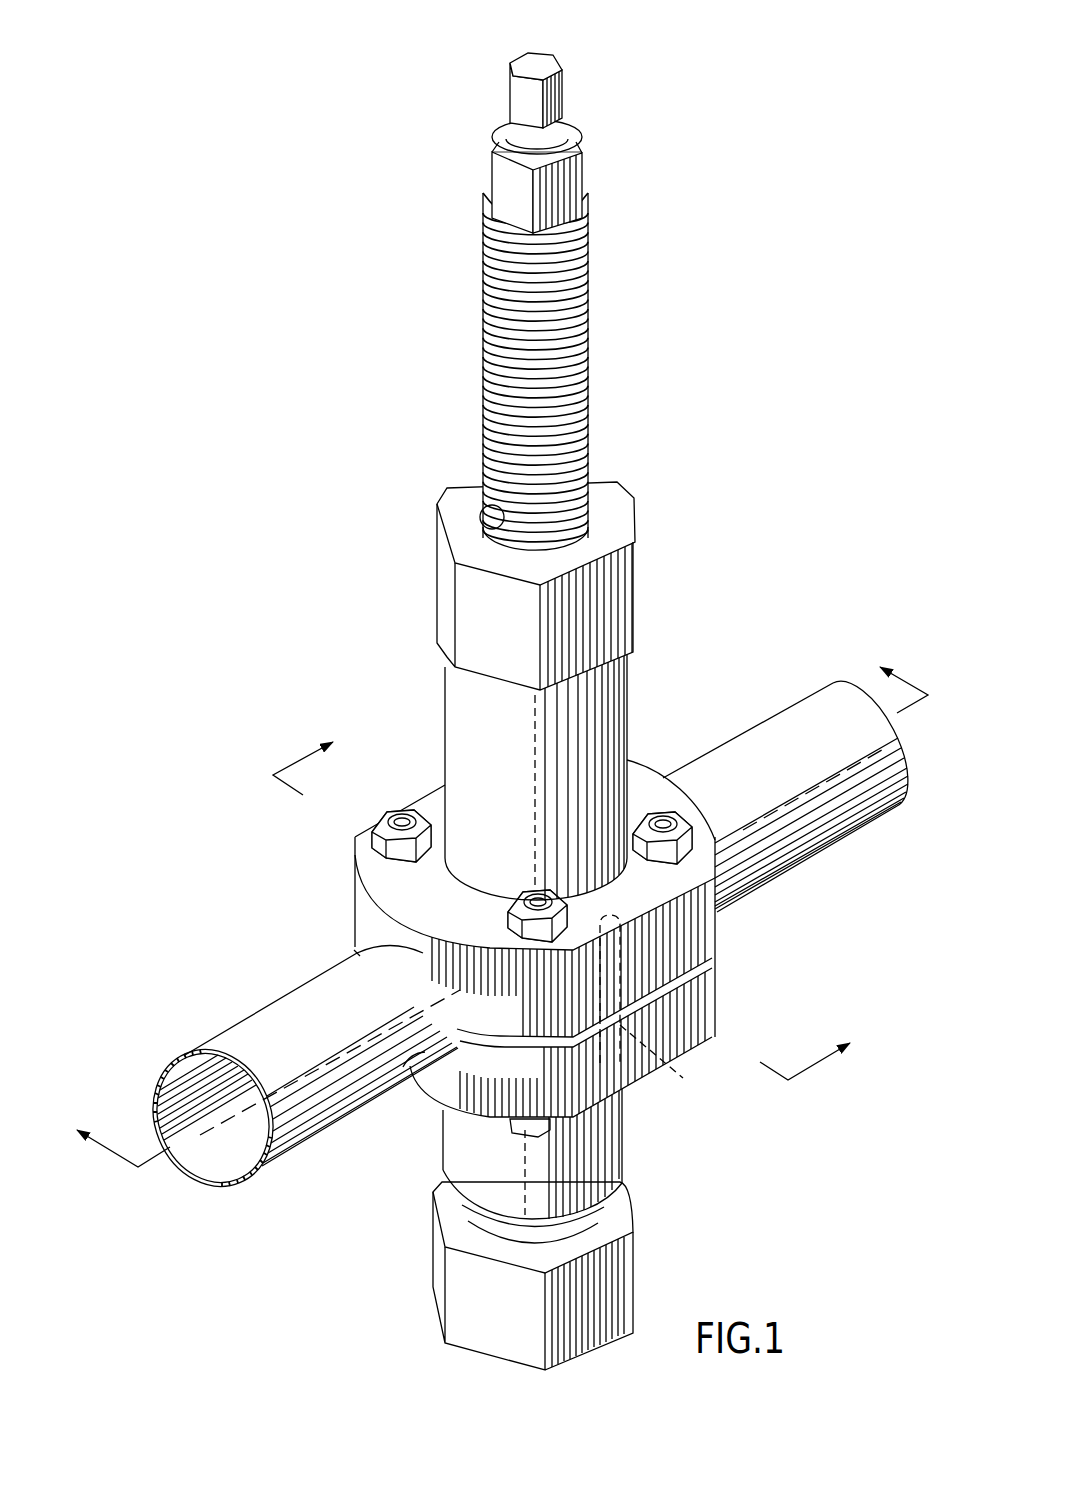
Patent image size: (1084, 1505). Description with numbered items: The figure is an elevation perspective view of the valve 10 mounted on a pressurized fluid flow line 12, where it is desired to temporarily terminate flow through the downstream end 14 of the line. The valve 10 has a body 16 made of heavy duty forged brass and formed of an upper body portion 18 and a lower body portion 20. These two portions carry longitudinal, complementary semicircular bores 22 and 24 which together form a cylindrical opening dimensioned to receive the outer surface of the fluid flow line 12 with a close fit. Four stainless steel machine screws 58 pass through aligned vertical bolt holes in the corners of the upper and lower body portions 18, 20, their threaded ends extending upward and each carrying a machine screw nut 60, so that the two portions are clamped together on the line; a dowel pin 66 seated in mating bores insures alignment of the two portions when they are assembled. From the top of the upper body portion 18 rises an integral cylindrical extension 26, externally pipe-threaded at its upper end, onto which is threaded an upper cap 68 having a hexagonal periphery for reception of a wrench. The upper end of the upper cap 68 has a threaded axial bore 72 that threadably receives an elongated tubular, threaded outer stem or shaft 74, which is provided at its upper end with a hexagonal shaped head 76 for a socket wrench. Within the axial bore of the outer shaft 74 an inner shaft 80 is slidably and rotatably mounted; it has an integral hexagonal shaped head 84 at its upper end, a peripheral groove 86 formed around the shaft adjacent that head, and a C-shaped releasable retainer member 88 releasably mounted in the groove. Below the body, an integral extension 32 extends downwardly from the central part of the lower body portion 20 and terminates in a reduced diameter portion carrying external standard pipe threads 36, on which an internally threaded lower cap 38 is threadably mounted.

The valve 10 is at (338, 855).
The fluid flow line 12 is at (790, 718).
The downstream end 14 is at (262, 1018).
The body 16 is at (650, 765).
The upper body portion 18 is at (705, 935).
The lower body portion 20 is at (705, 1000).
The semicircular bore 22 is at (362, 950).
The semicircular bore 24 is at (415, 1063).
The cylindrical extension 26 is at (613, 690).
The integral extension 32 is at (608, 1137).
The external standard pipe threads 36 is at (590, 1222).
The lower cap 38 is at (640, 1283).
The machine screw 58 is at (530, 1125).
The machine screw nut 60 is at (693, 837).
The dowel pin 66 is at (668, 1062).
The upper cap 68 is at (440, 584).
The threaded axial bore 72 is at (488, 507).
The threaded outer stem or shaft 74 is at (478, 283).
The hexagonal shaped head 76 is at (507, 185).
The inner shaft 80 is at (505, 70).
The hexagonal shaped head 84 is at (523, 105).
The peripheral groove 86 is at (567, 158).
The C-shaped releasable retainer member 88 is at (567, 133).